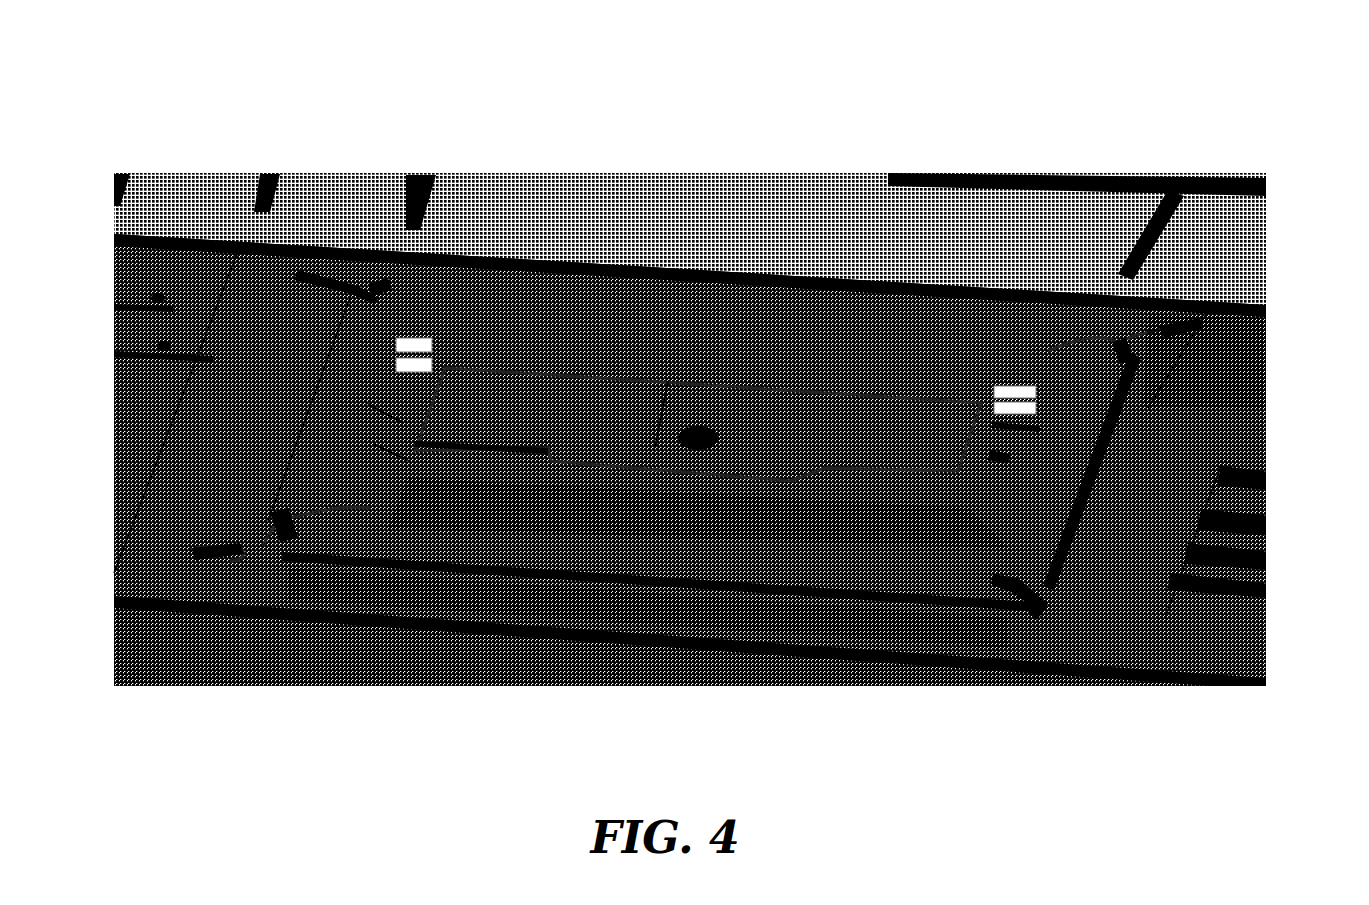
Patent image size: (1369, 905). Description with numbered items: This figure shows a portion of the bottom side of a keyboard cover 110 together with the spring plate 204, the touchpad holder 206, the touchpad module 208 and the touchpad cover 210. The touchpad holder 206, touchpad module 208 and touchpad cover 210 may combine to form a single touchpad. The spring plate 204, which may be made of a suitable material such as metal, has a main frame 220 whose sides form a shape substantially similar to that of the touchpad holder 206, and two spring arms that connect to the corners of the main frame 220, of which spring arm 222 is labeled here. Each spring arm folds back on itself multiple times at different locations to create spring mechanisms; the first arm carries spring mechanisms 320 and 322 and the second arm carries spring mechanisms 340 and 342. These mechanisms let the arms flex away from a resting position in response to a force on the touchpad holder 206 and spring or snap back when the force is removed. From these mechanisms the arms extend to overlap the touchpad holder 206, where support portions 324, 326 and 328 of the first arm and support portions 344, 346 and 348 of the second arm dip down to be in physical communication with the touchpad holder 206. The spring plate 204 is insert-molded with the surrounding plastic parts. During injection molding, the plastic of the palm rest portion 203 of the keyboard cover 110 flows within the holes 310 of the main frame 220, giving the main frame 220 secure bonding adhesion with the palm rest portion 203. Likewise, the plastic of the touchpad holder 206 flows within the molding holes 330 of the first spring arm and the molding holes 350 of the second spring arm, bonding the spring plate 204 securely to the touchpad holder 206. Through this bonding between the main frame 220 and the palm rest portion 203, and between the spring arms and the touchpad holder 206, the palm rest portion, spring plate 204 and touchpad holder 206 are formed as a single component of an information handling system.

The keyboard cover 110 is at (976, 86).
The palm rest portion 203 is at (1172, 620).
The spring plate 204 is at (624, 262).
The touchpad holder 206 is at (498, 527).
The touchpad module 208 is at (760, 447).
The touchpad cover 210 is at (648, 578).
The main frame 220 is at (1185, 372).
The spring arm 222 is at (432, 274).
The holes 310 is at (396, 575).
The spring mechanism 320 is at (290, 250).
The spring mechanism 322 is at (192, 548).
The support portion 324 is at (372, 278).
The support portion 326 is at (272, 522).
The support portion 328 is at (378, 407).
The molding holes 330 is at (385, 445).
The spring mechanism 340 is at (1185, 300).
The spring mechanism 342 is at (1063, 600).
The support portion 344 is at (1102, 320).
The support portion 346 is at (1003, 565).
The support portion 348 is at (1005, 420).
The molding holes 350 is at (990, 448).